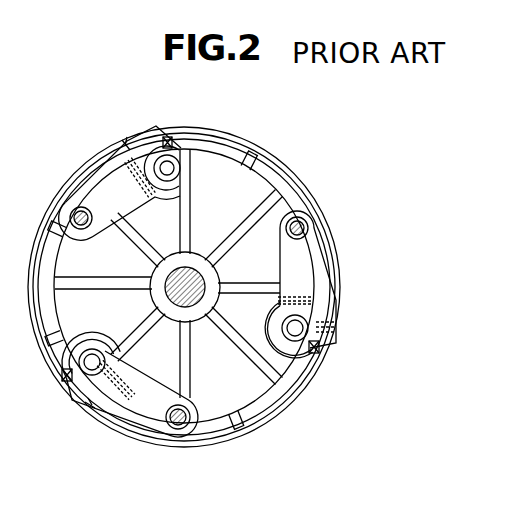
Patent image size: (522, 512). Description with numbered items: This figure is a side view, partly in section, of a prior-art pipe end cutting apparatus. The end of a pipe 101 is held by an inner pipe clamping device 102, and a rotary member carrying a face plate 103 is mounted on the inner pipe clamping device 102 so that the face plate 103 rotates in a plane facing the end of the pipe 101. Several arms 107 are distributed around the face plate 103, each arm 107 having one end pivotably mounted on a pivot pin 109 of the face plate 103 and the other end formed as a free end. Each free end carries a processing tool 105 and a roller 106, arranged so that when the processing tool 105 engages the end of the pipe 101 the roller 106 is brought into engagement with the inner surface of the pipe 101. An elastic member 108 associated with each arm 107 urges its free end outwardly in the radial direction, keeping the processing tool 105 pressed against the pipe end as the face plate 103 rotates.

The pipe 101 is at (235, 136).
The inner pipe clamping device 102 is at (262, 170).
The face plate 103 is at (128, 281).
The processing tool 105 is at (336, 323).
The roller 106 is at (300, 356).
The arm 107 is at (298, 263).
The elastic member 108 is at (313, 304).
The pivot pin 109 is at (303, 226).